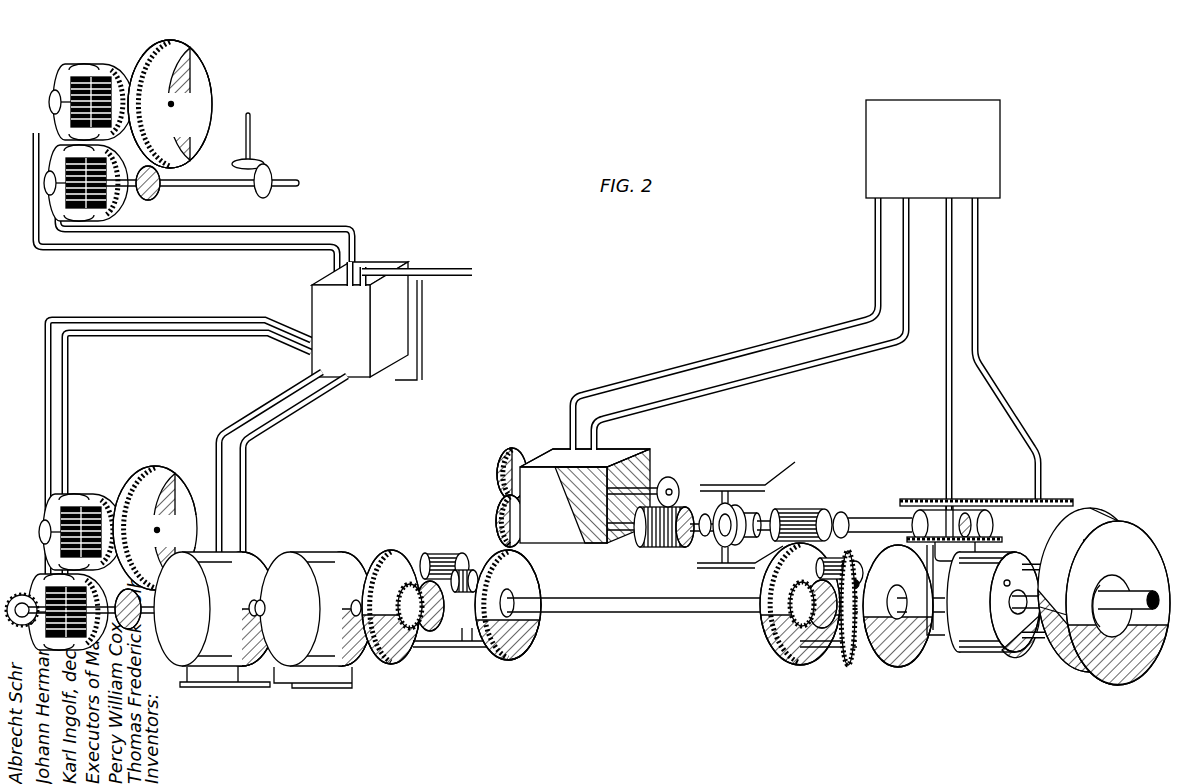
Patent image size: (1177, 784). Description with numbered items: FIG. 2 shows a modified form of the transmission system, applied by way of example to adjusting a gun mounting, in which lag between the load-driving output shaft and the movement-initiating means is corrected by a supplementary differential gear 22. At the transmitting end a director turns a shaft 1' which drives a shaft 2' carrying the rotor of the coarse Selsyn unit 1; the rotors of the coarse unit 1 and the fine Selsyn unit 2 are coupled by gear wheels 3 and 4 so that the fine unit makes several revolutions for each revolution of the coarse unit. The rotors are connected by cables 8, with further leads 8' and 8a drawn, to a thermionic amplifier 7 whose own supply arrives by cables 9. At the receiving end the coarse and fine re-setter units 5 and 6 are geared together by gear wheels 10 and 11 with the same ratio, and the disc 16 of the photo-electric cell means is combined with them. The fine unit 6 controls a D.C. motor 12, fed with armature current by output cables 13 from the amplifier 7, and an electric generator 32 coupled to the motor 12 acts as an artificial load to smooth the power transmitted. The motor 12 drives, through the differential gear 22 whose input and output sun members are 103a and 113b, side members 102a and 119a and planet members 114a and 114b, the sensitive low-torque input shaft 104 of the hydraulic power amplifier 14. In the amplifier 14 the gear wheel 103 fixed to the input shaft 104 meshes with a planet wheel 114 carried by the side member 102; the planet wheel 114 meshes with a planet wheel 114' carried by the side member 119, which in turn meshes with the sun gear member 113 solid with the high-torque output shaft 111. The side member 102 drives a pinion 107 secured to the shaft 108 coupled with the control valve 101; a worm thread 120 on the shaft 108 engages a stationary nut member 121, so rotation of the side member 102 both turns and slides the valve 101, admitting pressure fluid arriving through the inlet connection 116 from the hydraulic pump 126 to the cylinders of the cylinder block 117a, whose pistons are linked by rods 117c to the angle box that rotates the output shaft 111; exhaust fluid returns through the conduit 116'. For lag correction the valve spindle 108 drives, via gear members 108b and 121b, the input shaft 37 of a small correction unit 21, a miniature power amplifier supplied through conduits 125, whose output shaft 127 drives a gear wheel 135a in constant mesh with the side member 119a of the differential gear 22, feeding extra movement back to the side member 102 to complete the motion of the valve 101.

The coarse Selsyn unit 1 is at (186, 104).
The gear wheel 4 is at (204, 100).
The shaft 1' is at (261, 155).
The shaft 2' is at (198, 196).
The fine Selsyn unit 2 is at (90, 186).
The gear wheel 3 is at (152, 198).
The electromagnet 8a is at (44, 130).
The cables 8 is at (194, 210).
The conductor 8' is at (179, 460).
The thermionic amplifier 7 is at (367, 321).
The cables 9 is at (461, 272).
The output cables 13 is at (283, 393).
The gear wheel 11 is at (165, 467).
The coarse Selsyn re-setter unit 5 is at (100, 495).
The disc 16 is at (27, 594).
The fine Selsyn unit 6 is at (98, 622).
The gear wheel 10 is at (150, 614).
The D.C. motor 12 is at (215, 619).
The electric generator 32 is at (314, 620).
The side member 102a is at (385, 565).
The input sun gear member 103a is at (440, 632).
The planet member 114a is at (435, 553).
The planet member 114b is at (470, 570).
The input shaft 104 is at (643, 612).
The differential gear 22 is at (481, 654).
The output sun gear member 113b is at (521, 645).
The side member 119a is at (541, 619).
The output shaft 127 is at (520, 458).
The gear wheel 135a is at (495, 512).
The correction unit 21 is at (585, 496).
The input shaft 37 is at (647, 450).
The supply and return conduits 125 is at (805, 360).
The inlet connection 116 is at (919, 359).
The conduit 116' is at (1015, 349).
The hydraulic pump 126 is at (1001, 172).
The gear member 108b is at (645, 550).
The gear member 121b is at (690, 459).
The stationary nut member 121 is at (724, 548).
The worm thread 120 is at (745, 484).
The shaft 108 is at (768, 512).
The pinion 107 is at (810, 509).
The side member 102 is at (771, 656).
The gear wheel 103 is at (777, 635).
The planet wheel 114 is at (846, 529).
The planet wheel 114' is at (881, 522).
The sun gear member 113 is at (848, 632).
The side member 119 is at (920, 652).
The control valve 101 is at (958, 498).
The cylinder block 117a is at (1005, 550).
The hydraulic power amplifier unit 14 is at (991, 655).
The rods 117c is at (1085, 540).
The output shaft 111 is at (1142, 596).